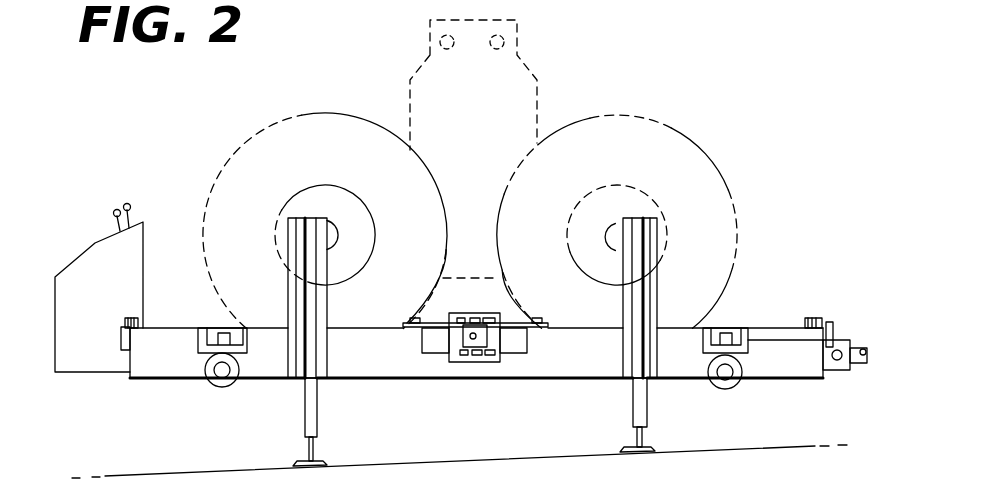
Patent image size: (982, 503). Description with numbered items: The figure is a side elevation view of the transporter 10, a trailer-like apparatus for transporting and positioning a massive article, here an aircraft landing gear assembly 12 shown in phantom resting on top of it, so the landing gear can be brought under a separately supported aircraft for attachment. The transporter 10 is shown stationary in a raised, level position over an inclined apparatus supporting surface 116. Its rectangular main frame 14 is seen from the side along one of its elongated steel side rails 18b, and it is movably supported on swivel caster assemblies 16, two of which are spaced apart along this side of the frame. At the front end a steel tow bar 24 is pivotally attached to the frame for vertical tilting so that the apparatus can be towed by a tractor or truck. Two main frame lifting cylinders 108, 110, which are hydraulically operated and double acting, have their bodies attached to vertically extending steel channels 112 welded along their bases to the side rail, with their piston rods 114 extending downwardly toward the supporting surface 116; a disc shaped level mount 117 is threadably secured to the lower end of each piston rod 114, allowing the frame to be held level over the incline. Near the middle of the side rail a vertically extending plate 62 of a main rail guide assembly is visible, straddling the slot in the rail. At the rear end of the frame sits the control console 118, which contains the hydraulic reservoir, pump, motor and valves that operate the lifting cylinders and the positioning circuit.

The transporter 10 is at (805, 295).
The aircraft landing gear assembly 12 is at (557, 143).
The main frame 14 is at (126, 378).
The swivel caster assemblies 16 is at (210, 382).
The side rail 18b is at (768, 343).
The tow bar 24 is at (858, 367).
The vertically extending plate 62 is at (462, 352).
The main frame lifting cylinder 108 is at (300, 185).
The main frame lifting cylinder 110 is at (640, 217).
The vertically extending steel channel 112 is at (286, 297).
The piston rod 114 is at (318, 415).
The apparatus supporting surface 116 is at (538, 457).
The level mount 117 is at (300, 460).
The control console 118 is at (88, 253).